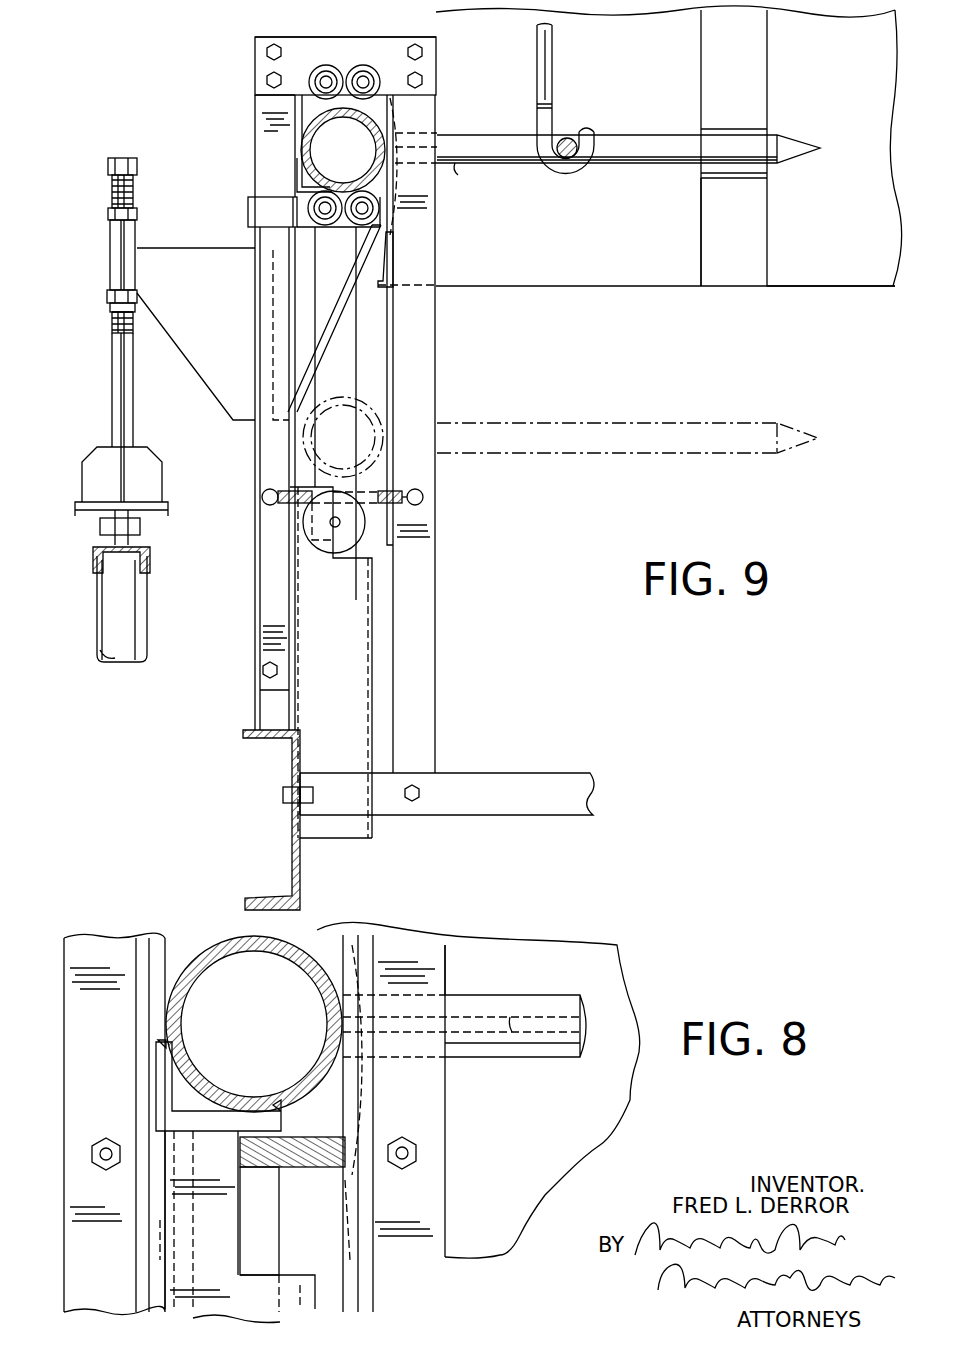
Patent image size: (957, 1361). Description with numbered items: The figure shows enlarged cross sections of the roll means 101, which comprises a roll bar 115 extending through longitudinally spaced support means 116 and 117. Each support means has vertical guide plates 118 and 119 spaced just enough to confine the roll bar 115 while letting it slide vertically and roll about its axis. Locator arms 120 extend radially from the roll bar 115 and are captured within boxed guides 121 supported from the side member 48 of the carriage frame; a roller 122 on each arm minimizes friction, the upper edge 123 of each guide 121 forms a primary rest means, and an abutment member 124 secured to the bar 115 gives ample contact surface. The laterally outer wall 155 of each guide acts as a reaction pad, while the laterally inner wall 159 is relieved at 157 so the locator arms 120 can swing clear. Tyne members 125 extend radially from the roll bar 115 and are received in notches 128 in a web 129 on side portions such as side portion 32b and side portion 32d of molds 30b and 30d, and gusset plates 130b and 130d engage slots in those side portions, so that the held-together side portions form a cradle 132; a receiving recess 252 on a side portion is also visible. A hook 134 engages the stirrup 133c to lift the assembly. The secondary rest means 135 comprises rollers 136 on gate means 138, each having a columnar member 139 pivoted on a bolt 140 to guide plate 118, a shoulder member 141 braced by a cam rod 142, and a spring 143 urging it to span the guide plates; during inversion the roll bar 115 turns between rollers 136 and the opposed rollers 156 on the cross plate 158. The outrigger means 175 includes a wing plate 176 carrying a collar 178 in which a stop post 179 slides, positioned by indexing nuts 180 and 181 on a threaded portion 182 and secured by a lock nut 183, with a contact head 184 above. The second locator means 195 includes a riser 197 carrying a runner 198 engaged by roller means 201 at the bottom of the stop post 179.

In FIG. 9, the support means 116 is at (243, 42).
In FIG. 9, the cross plate 158 is at (307, 42).
In FIG. 9, the opposed rollers 156 is at (350, 70).
In FIG. 9, the roll means 101 is at (238, 92).
In FIG. 9, the guide plate 118 is at (262, 136).
In FIG. 8, the guide plate 118 is at (86, 950).
In FIG. 9, the roll bar 115 is at (372, 122).
In FIG. 8, the roll bar 115 is at (205, 962).
In FIG. 9, the abutment member 124 is at (300, 176).
In FIG. 8, the abutment member 124 is at (156, 1097).
In FIG. 9, the secondary rest means 135 is at (243, 203).
In FIG. 9, the shoulder member 141 is at (272, 218).
In FIG. 9, the rollers 136 is at (375, 216).
In FIG. 9, the receiving recess 252 is at (396, 246).
In FIG. 9, the hook 134 is at (553, 120).
In FIG. 9, the notch 128 is at (722, 142).
In FIG. 9, the gusset plate 130d is at (458, 178).
In FIG. 9, the stirrup 133c is at (568, 160).
In FIG. 9, the tyne member 125 is at (650, 160).
In FIG. 8, the tyne member 125 is at (542, 1062).
In FIG. 9, the side portion 32d is at (850, 228).
In FIG. 9, the web 129 is at (717, 240).
In FIG. 9, the mold 30d is at (718, 295).
In FIG. 9, the cradle 132 is at (806, 292).
In FIG. 9, the wing plate 176 is at (232, 305).
In FIG. 9, the cam rod 142 is at (340, 298).
In FIG. 9, the locator arm 120 is at (346, 338).
In FIG. 8, the locator arm 120 is at (263, 1212).
In FIG. 9, the guide plate 119 is at (412, 358).
In FIG. 8, the guide plate 119 is at (355, 948).
In FIG. 9, the spring 143 is at (412, 492).
In FIG. 9, the roller 122 is at (378, 560).
In FIG. 9, the upper edge 123 is at (327, 478).
In FIG. 8, the upper edge 123 is at (192, 1133).
In FIG. 9, the gate means 138 is at (255, 563).
In FIG. 9, the columnar member 139 is at (270, 620).
In FIG. 9, the bolt 140 is at (263, 678).
In FIG. 9, the boxed guide 121 is at (352, 683).
In FIG. 8, the boxed guide 121 is at (282, 1300).
In FIG. 9, the side member 48 is at (292, 836).
In FIG. 9, the contact head 184 is at (115, 158).
In FIG. 9, the indexing nut 180 is at (110, 215).
In FIG. 9, the collar 178 is at (112, 252).
In FIG. 9, the indexing nut 181 is at (108, 296).
In FIG. 9, the lock nut 183 is at (107, 306).
In FIG. 9, the outrigger means 175 is at (96, 320).
In FIG. 9, the threaded portion 182 is at (112, 325).
In FIG. 9, the stop post 179 is at (115, 392).
In FIG. 9, the roller means 201 is at (118, 526).
In FIG. 9, the runner 198 is at (138, 550).
In FIG. 9, the riser 197 is at (105, 622).
In FIG. 9, the second locator means 195 is at (80, 655).
In FIG. 8, the support means 117 is at (128, 912).
In FIG. 8, the mold 30b is at (522, 920).
In FIG. 8, the gusset plate 130b is at (512, 1017).
In FIG. 8, the relief 157 is at (241, 1220).
In FIG. 8, the laterally outer wall 155 is at (165, 1232).
In FIG. 8, the laterally inner wall 159 is at (308, 1312).
In FIG. 8, the side portion 32b is at (521, 1173).